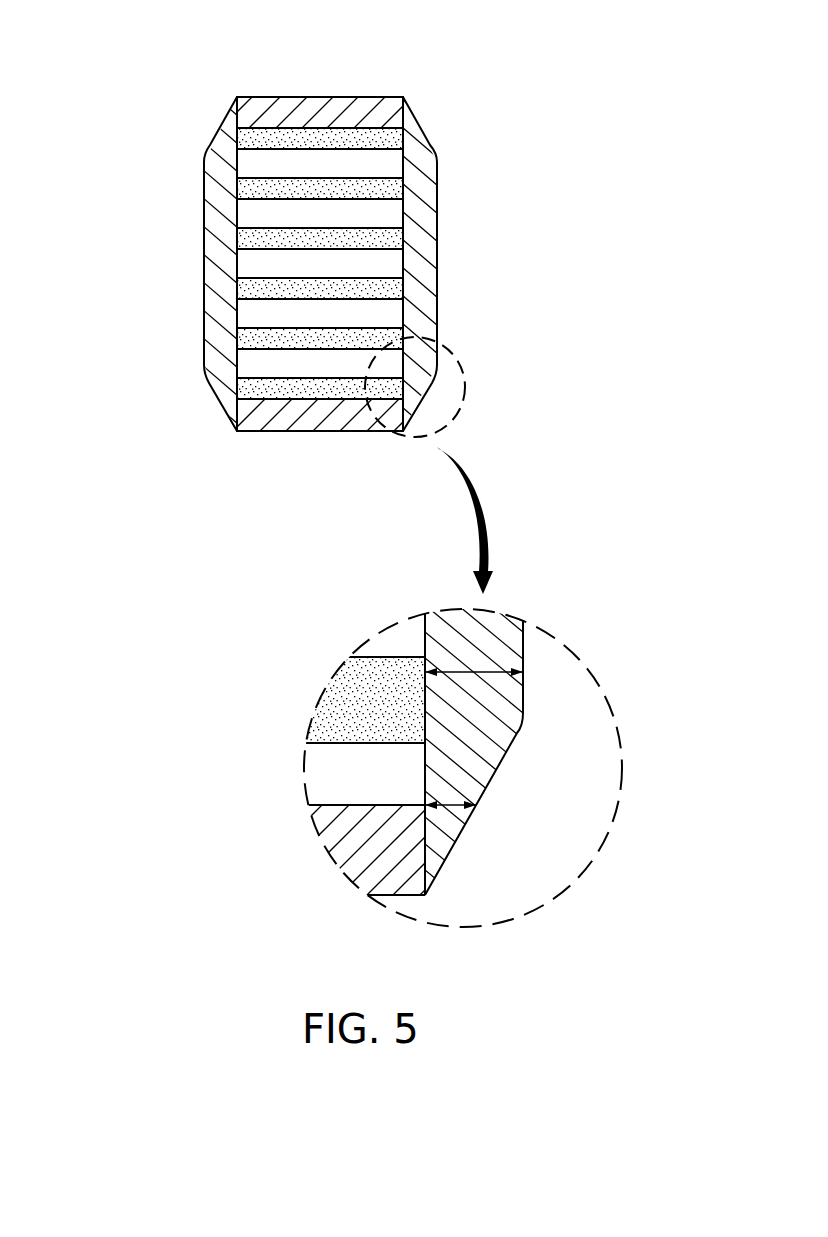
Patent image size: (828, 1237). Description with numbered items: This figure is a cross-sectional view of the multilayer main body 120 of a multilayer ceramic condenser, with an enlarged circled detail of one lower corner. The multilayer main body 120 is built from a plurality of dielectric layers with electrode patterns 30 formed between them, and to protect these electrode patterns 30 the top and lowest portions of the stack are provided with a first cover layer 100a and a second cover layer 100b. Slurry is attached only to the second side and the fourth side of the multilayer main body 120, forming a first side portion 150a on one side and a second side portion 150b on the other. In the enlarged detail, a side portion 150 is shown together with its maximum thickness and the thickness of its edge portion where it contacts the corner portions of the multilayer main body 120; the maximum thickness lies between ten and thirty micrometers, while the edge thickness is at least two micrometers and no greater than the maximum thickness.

The multilayer main body 120 is at (382, 70).
The first cover layer 100a is at (305, 112).
The second cover layer 100b is at (305, 412).
The electrode (active material layer) 30 is at (395, 192).
The first side portion 150a is at (220, 260).
The second side portion 150b is at (420, 260).
The side portion 150 is at (483, 770).